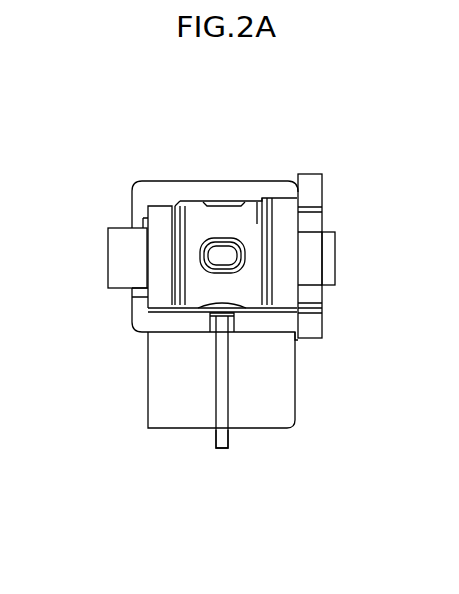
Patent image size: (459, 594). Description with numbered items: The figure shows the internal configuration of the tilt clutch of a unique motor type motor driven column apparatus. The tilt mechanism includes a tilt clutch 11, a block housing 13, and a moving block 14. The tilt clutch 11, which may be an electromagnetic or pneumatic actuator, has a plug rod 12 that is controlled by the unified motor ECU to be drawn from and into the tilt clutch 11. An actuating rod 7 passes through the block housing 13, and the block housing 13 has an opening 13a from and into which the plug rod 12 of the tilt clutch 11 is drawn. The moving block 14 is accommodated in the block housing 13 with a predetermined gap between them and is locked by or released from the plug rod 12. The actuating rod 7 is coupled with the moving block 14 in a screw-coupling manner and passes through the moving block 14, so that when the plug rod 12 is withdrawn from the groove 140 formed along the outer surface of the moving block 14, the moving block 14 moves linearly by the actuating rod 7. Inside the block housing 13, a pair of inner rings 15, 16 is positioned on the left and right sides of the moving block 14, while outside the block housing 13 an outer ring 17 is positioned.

The actuating rod 7 is at (117, 267).
The tilt clutch 11 is at (281, 388).
The plug rod 12 is at (222, 437).
The block housing 13 is at (196, 190).
The opening 13a is at (212, 316).
The moving block 14 is at (222, 240).
The inner ring 15 is at (163, 278).
The inner ring 16 is at (283, 247).
The outer ring 17 is at (312, 298).
The groove 140 is at (223, 313).